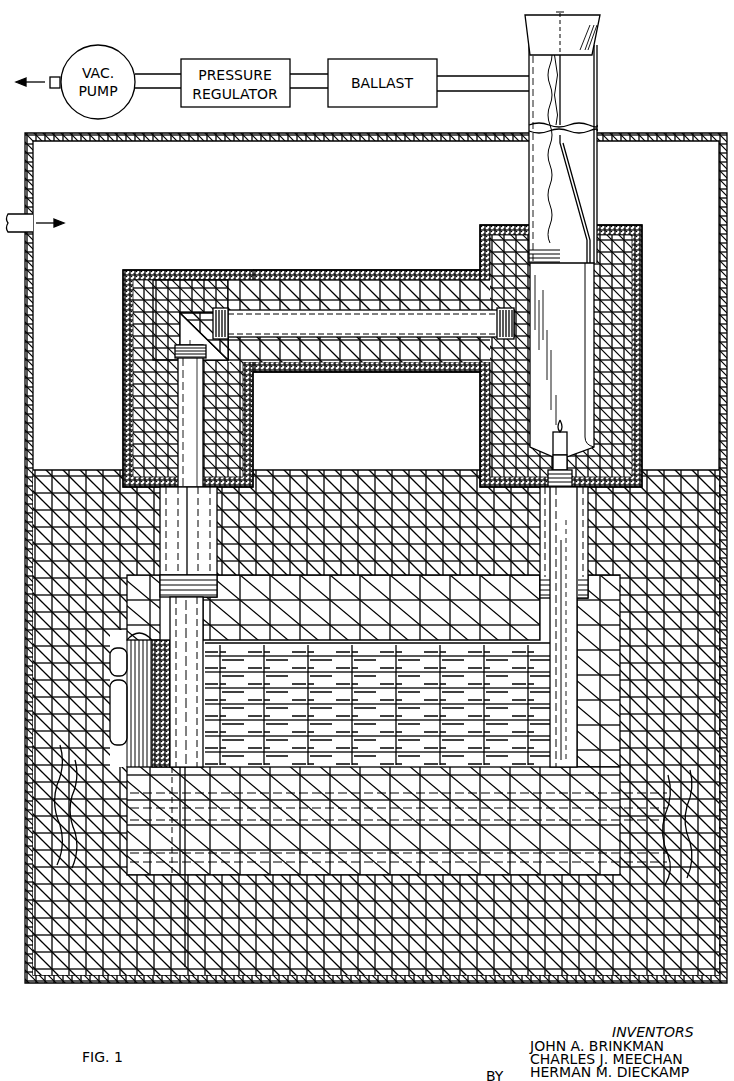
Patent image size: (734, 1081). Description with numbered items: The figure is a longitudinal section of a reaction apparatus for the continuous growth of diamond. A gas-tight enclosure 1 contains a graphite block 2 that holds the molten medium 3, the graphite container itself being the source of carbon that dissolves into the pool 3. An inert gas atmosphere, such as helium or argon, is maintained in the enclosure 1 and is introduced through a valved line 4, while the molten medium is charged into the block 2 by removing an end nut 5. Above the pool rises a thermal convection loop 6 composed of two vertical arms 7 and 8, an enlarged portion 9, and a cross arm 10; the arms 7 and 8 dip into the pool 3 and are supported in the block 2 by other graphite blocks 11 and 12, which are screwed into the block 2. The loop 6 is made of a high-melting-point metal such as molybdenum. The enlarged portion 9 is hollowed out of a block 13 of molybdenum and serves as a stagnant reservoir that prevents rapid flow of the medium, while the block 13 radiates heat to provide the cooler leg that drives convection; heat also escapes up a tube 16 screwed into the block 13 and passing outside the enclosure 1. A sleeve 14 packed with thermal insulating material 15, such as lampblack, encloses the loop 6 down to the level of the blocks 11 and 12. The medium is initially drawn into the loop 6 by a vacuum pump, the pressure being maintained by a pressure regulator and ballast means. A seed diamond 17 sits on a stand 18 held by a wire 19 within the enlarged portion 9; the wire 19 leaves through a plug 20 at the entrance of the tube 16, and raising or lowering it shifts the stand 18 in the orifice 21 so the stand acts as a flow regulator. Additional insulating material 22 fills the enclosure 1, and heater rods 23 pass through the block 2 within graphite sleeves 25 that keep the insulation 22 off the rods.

The gas-tight enclosure 1 is at (656, 134).
The graphite block 2 is at (167, 462).
The molten medium 3 is at (390, 665).
The valved line 4 is at (22, 224).
The end nut 5 is at (115, 698).
The thermal convection loop 6 is at (255, 300).
The vertical arm 7 is at (185, 428).
The vertical arm 8 is at (560, 545).
The enlarged portion 9 is at (572, 342).
The cross arm 10 is at (340, 320).
The graphite block 11 is at (160, 528).
The graphite block 12 is at (540, 545).
The molybdenum block 13 is at (612, 393).
The sleeve 14 is at (125, 345).
The thermal insulating material 15 is at (359, 321).
The tube 16 is at (600, 182).
The seed diamond 17 is at (565, 421).
The stand 18 is at (553, 442).
The wire 19 is at (580, 202).
The plug 20 is at (598, 30).
The orifice 21 is at (565, 461).
The insulating material 22 is at (376, 722).
The heater rods 23 is at (72, 862).
The graphite sleeves 25 is at (128, 882).